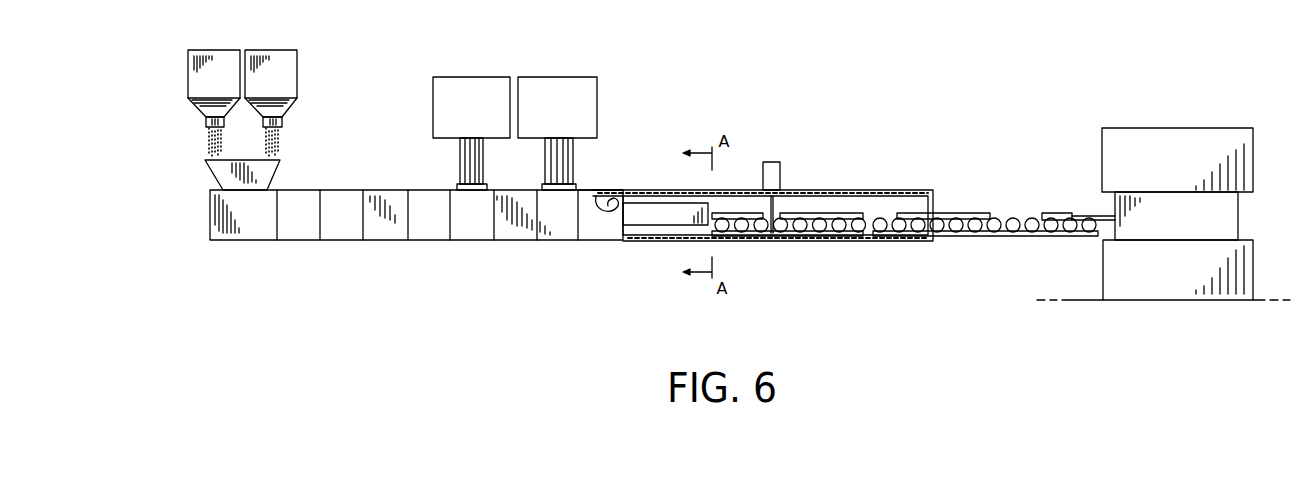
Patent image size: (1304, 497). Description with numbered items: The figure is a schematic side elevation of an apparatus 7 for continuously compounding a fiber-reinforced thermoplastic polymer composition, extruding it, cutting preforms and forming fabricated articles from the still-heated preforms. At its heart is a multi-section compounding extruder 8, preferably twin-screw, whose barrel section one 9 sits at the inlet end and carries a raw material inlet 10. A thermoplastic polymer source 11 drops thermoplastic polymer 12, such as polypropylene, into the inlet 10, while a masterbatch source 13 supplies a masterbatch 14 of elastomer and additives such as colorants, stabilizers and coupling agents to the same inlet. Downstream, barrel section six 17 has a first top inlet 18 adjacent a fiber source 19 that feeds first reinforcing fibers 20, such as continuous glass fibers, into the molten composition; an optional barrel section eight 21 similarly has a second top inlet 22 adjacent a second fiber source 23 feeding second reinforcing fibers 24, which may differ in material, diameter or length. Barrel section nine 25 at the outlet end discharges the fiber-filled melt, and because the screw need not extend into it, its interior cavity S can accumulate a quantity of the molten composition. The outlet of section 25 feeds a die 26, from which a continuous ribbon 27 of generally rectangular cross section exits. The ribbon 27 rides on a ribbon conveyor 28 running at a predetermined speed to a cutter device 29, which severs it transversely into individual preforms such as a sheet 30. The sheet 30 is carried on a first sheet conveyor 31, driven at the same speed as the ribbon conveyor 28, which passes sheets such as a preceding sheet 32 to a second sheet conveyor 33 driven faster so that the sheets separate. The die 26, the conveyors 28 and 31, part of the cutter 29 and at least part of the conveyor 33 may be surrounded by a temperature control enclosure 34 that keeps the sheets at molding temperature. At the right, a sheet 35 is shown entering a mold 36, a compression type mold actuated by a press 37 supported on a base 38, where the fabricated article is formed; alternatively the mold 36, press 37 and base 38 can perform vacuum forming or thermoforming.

The apparatus 7 is at (750, 33).
The compounding extruder 8 is at (371, 248).
The barrel section one 9 is at (239, 242).
The raw material inlet 10 is at (278, 166).
The thermoplastic polymer source 11 is at (192, 62).
The thermoplastic polymer 12 is at (200, 140).
The masterbatch source 13 is at (293, 59).
The masterbatch 14 is at (285, 135).
The barrel section six 17 is at (462, 243).
The first top inlet 18 is at (456, 186).
The fiber source 19 is at (440, 86).
The first reinforcing fibers 20 is at (456, 160).
The barrel section eight 21 is at (548, 240).
The second top inlet 22 is at (546, 184).
The fiber source 23 is at (594, 84).
The second reinforcing fibers 24 is at (577, 160).
The barrel section nine 25 is at (597, 232).
The die 26 is at (641, 222).
The ribbon 27 is at (727, 213).
The ribbon conveyor 28 is at (745, 238).
The cutter device 29 is at (775, 170).
The sheet 30 is at (826, 213).
The first sheet conveyor 31 is at (815, 238).
The preceding sheet 32 is at (944, 213).
The second sheet conveyor 33 is at (966, 237).
The temperature control enclosure 34 is at (868, 190).
The sheet 35 is at (1075, 213).
The mold 36 is at (1240, 216).
The press 37 is at (1249, 133).
The base 38 is at (1250, 270).
The interior cavity S is at (604, 196).